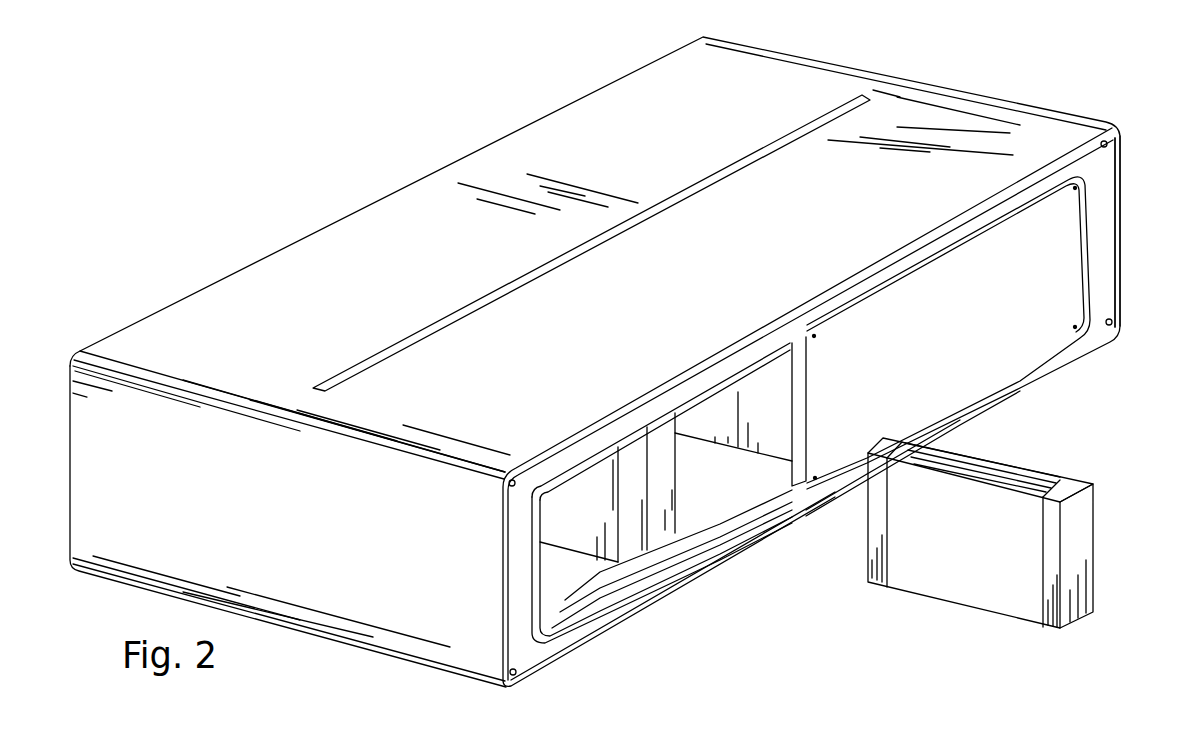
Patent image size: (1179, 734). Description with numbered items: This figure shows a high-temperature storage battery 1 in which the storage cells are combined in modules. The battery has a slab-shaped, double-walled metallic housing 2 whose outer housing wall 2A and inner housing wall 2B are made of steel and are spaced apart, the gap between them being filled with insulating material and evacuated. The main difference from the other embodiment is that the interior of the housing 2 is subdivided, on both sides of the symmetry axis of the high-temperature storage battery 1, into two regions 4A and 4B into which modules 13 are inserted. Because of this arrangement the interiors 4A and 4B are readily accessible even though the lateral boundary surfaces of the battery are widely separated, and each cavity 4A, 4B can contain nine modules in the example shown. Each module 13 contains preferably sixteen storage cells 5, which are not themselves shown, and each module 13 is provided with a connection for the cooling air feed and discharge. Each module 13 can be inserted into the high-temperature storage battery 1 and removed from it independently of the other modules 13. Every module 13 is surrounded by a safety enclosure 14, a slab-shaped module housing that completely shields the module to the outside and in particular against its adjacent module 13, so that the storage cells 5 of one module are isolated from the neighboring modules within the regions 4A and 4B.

The high-temperature storage battery 1 is at (397, 65).
The housing 2 is at (486, 172).
The outer housing wall 2A is at (1121, 216).
The inner housing wall 2B is at (1088, 285).
The region 4A is at (570, 533).
The region 4B is at (214, 312).
The storage cells 5 is at (1013, 478).
The module 13 is at (955, 577).
The safety enclosure 14 is at (1087, 535).